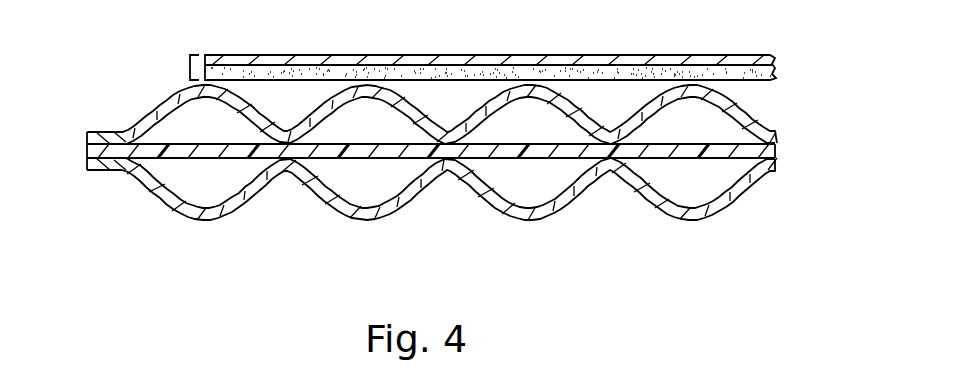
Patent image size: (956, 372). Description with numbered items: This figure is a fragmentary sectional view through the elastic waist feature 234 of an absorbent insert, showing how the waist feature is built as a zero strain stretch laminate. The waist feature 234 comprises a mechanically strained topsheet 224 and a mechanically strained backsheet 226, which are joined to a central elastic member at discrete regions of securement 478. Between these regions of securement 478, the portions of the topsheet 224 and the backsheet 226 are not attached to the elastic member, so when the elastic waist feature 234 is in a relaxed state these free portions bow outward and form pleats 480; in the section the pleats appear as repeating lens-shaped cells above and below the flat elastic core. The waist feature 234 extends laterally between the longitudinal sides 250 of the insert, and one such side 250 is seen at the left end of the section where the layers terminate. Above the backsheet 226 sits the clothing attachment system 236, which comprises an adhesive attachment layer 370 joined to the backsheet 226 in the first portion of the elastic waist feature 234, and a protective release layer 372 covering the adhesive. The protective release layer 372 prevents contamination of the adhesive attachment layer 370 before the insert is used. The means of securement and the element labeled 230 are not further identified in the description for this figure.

The topsheet 224 is at (370, 221).
The backsheet 226 is at (136, 130).
The central layer underside 230 is at (712, 158).
The elastic waist feature 234 is at (198, 176).
The clothing attachment system 236 is at (190, 68).
The longitudinal sides 250 is at (87, 151).
The adhesive attachment layer 370 is at (533, 49).
The protective release layer 372 is at (689, 56).
The regions of securement 478 is at (611, 172).
The pleats 480 is at (528, 213).